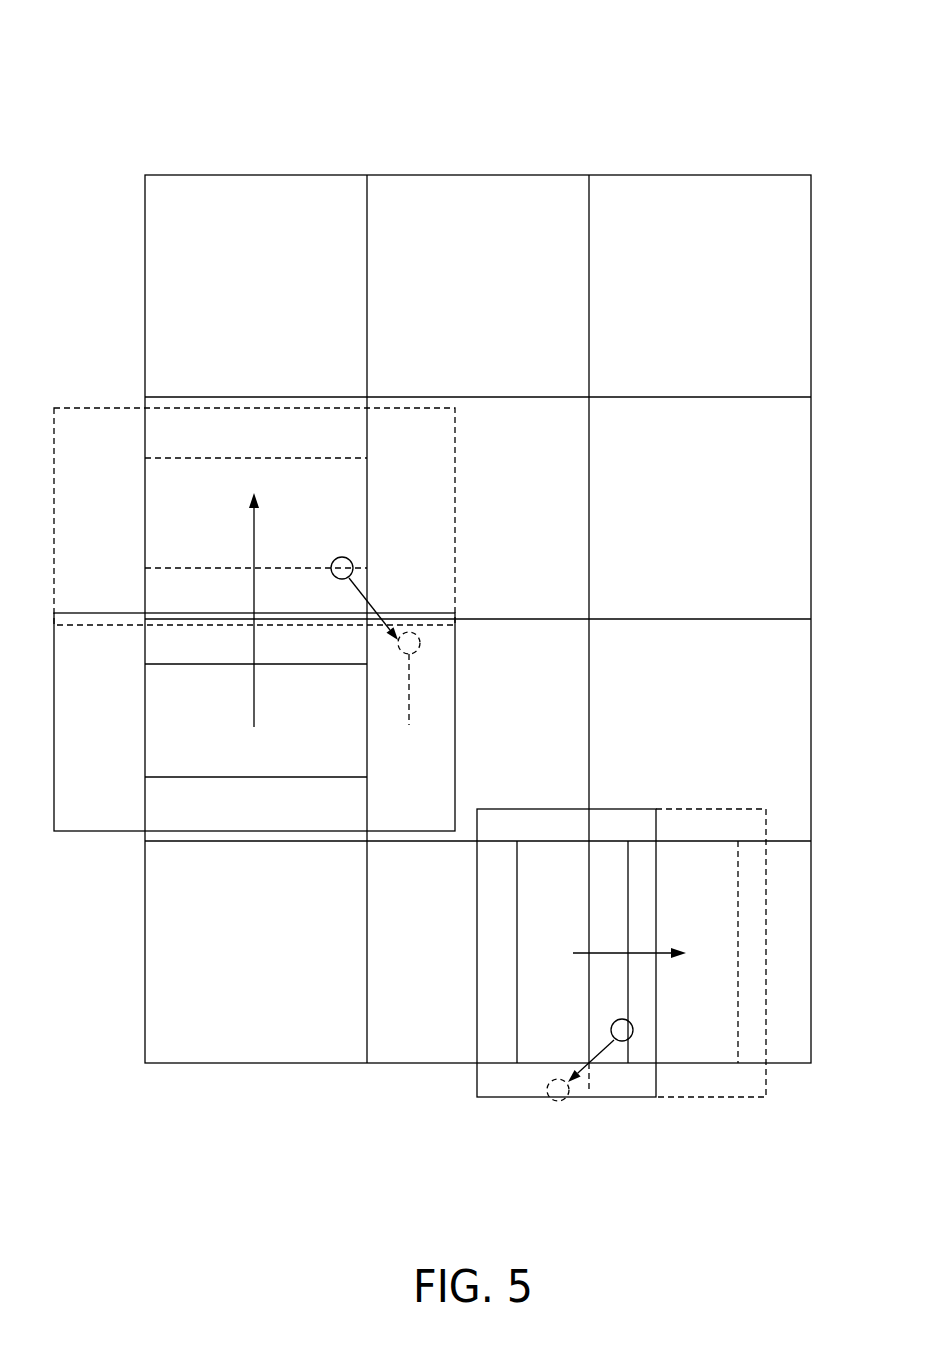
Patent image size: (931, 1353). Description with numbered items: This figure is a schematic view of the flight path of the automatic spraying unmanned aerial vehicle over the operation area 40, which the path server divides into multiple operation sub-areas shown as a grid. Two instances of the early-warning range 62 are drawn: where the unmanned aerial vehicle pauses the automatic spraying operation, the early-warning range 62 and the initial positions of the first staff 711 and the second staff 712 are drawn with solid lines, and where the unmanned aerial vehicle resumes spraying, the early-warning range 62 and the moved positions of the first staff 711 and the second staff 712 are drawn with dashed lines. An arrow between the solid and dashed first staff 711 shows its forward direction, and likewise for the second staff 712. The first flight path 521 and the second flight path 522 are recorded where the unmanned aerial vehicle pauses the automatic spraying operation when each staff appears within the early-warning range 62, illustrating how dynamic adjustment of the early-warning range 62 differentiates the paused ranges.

The operation area 40 is at (751, 107).
The early-warning range 62 is at (110, 408).
The first flight path 521 is at (254, 700).
The second flight path 522 is at (611, 952).
The first staff 711 is at (339, 557).
The second staff 712 is at (612, 1024).